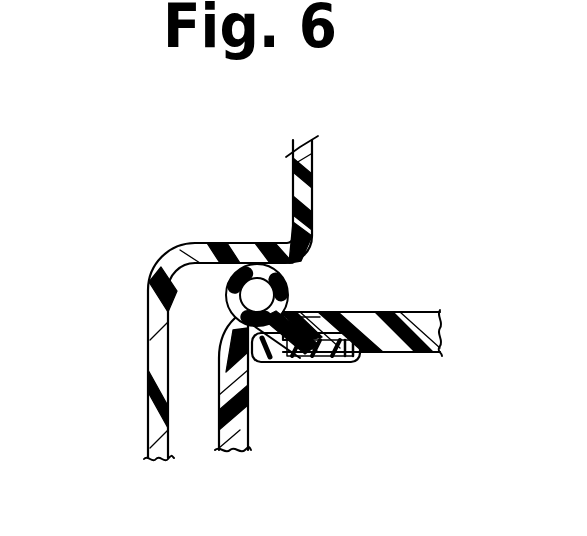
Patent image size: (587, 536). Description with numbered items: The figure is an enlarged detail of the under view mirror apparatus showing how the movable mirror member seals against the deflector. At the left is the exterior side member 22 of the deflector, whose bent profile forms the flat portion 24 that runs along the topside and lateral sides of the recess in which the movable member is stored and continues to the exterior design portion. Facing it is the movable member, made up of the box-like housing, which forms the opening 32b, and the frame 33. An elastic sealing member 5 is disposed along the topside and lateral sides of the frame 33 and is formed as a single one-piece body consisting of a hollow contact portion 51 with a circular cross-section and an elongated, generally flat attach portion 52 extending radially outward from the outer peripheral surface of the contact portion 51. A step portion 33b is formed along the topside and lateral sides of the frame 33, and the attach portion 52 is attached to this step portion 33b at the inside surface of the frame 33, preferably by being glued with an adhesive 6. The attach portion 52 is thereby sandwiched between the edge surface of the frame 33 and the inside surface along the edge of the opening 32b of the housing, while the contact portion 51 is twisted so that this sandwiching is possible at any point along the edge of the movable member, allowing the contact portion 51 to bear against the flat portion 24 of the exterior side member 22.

The elastic sealing member 5 is at (220, 306).
The adhesive 6 is at (337, 362).
The exterior side member 22 is at (156, 312).
The flat portion 24 is at (209, 266).
The opening 32b is at (215, 357).
The frame 33 is at (405, 286).
The step portion 33b is at (318, 332).
The contact portion 51 is at (279, 268).
The attach portion 52 is at (338, 409).